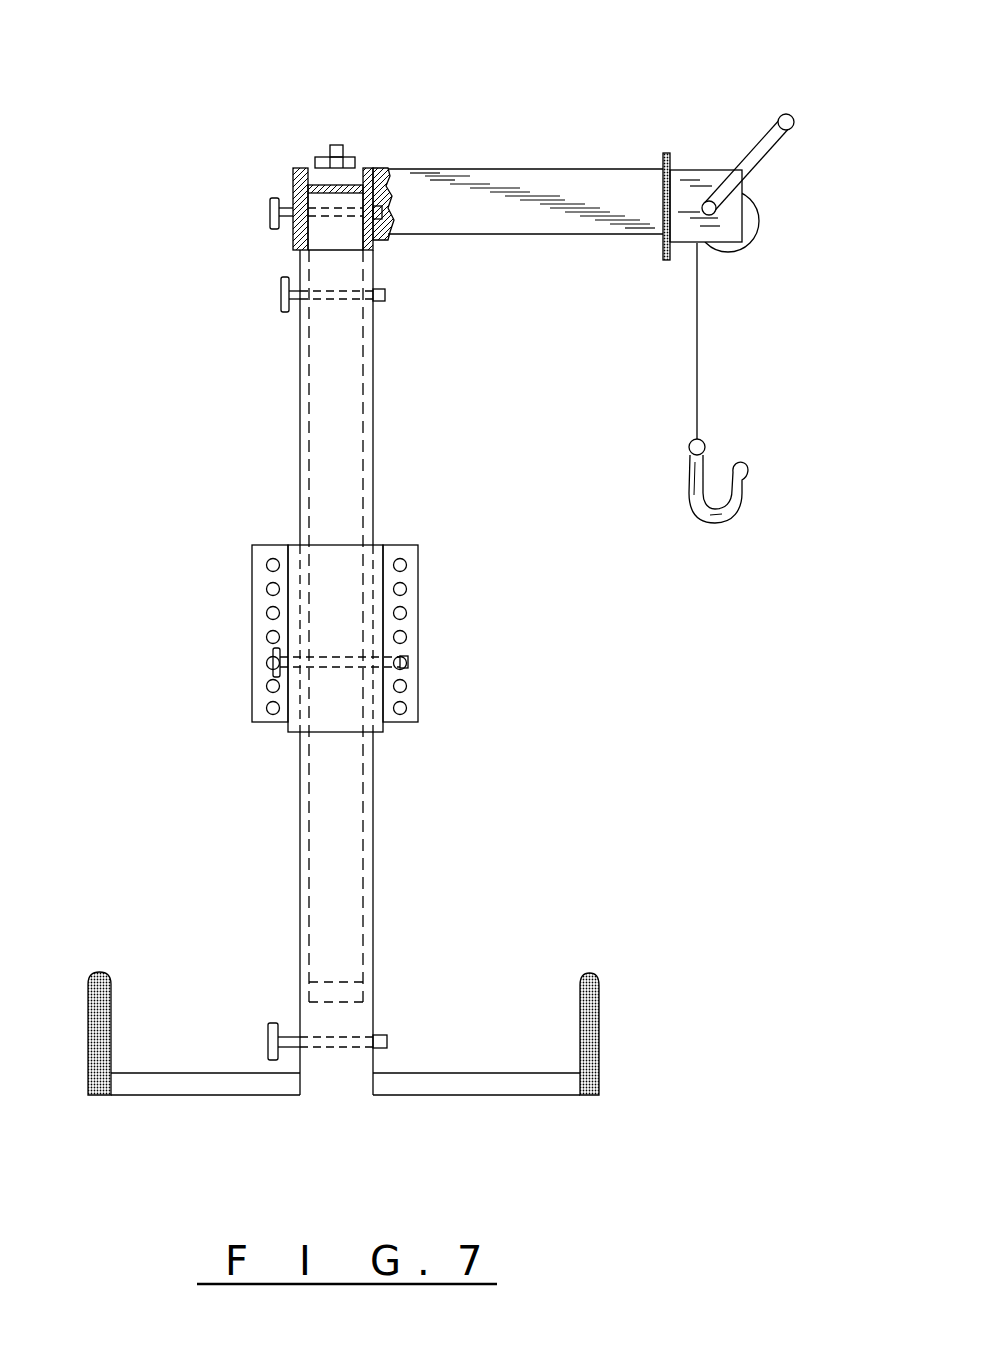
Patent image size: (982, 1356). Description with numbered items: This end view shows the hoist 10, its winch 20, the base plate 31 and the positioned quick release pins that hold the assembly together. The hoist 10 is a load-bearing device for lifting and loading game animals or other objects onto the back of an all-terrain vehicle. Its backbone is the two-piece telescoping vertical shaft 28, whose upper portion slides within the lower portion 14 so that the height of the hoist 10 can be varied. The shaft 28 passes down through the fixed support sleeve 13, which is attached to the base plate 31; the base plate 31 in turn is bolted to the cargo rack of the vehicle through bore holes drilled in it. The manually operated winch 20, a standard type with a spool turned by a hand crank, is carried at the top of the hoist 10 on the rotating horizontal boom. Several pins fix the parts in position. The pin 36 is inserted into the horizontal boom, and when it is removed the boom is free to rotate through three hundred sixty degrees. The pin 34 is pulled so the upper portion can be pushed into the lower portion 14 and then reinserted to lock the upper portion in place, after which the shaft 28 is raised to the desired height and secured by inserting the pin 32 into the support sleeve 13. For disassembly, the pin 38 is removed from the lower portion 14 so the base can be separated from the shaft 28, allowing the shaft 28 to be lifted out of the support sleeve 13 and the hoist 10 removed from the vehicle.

The hoist 10 is at (524, 113).
The fixed support sleeve 13 is at (340, 620).
The lower portion 14 is at (373, 828).
The manually operated winch 20 is at (787, 209).
The two-piece telescoping vertical shaft 28 is at (242, 440).
The base plate 31 is at (420, 552).
The pin 32 is at (272, 673).
The pin 34 is at (280, 298).
The pin 36 is at (268, 213).
The pin 38 is at (267, 1037).